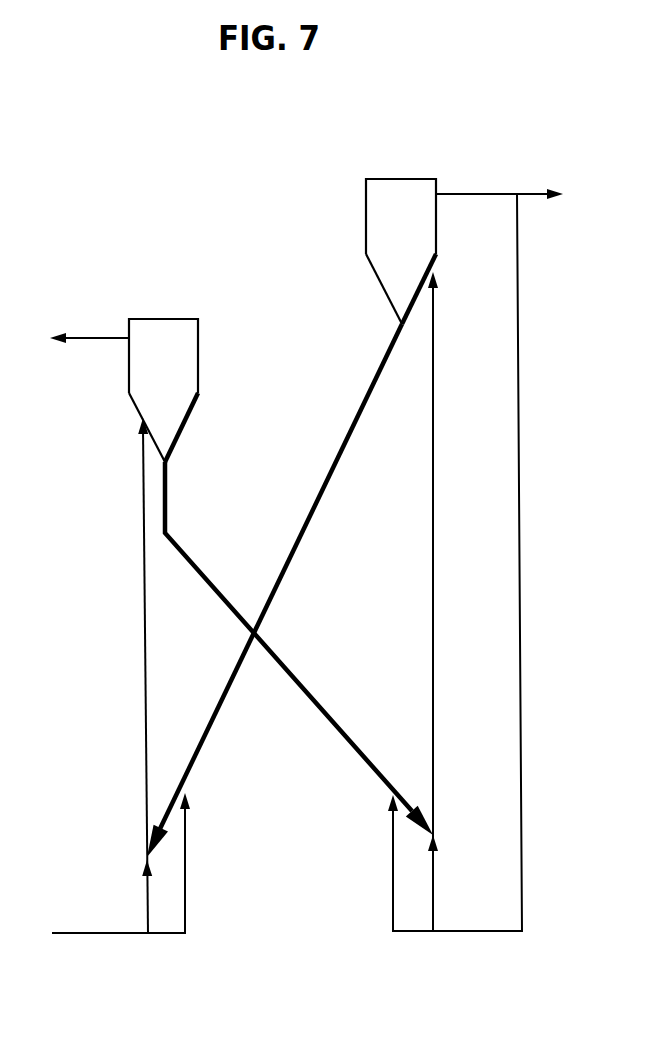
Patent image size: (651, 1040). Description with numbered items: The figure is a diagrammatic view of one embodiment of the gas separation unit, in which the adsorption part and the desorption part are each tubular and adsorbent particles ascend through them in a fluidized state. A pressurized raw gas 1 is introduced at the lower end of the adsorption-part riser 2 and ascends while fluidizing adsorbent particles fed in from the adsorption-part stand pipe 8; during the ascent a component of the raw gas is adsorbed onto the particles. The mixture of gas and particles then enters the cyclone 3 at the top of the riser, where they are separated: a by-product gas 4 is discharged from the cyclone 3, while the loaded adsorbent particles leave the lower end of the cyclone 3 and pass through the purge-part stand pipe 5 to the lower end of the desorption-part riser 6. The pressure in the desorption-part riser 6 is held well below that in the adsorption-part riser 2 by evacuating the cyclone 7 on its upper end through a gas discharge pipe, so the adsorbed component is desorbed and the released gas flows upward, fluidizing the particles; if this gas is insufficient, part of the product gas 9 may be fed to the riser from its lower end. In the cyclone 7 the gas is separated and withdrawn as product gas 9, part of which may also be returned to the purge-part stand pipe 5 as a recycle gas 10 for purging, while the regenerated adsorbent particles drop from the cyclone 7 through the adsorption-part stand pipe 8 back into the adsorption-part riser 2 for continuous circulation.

The pressurized raw gas 1 is at (118, 935).
The adsorption-part riser 2 is at (140, 462).
The cyclone 3 is at (167, 327).
The by-product gas 4 is at (97, 337).
The purge-part stand pipe 5 is at (340, 735).
The desorption-part riser 6 is at (432, 452).
The cyclone 7 is at (405, 186).
The adsorption-part stand pipe 8 is at (387, 367).
The product gas 9 is at (474, 193).
The recycle gas 10 is at (482, 934).